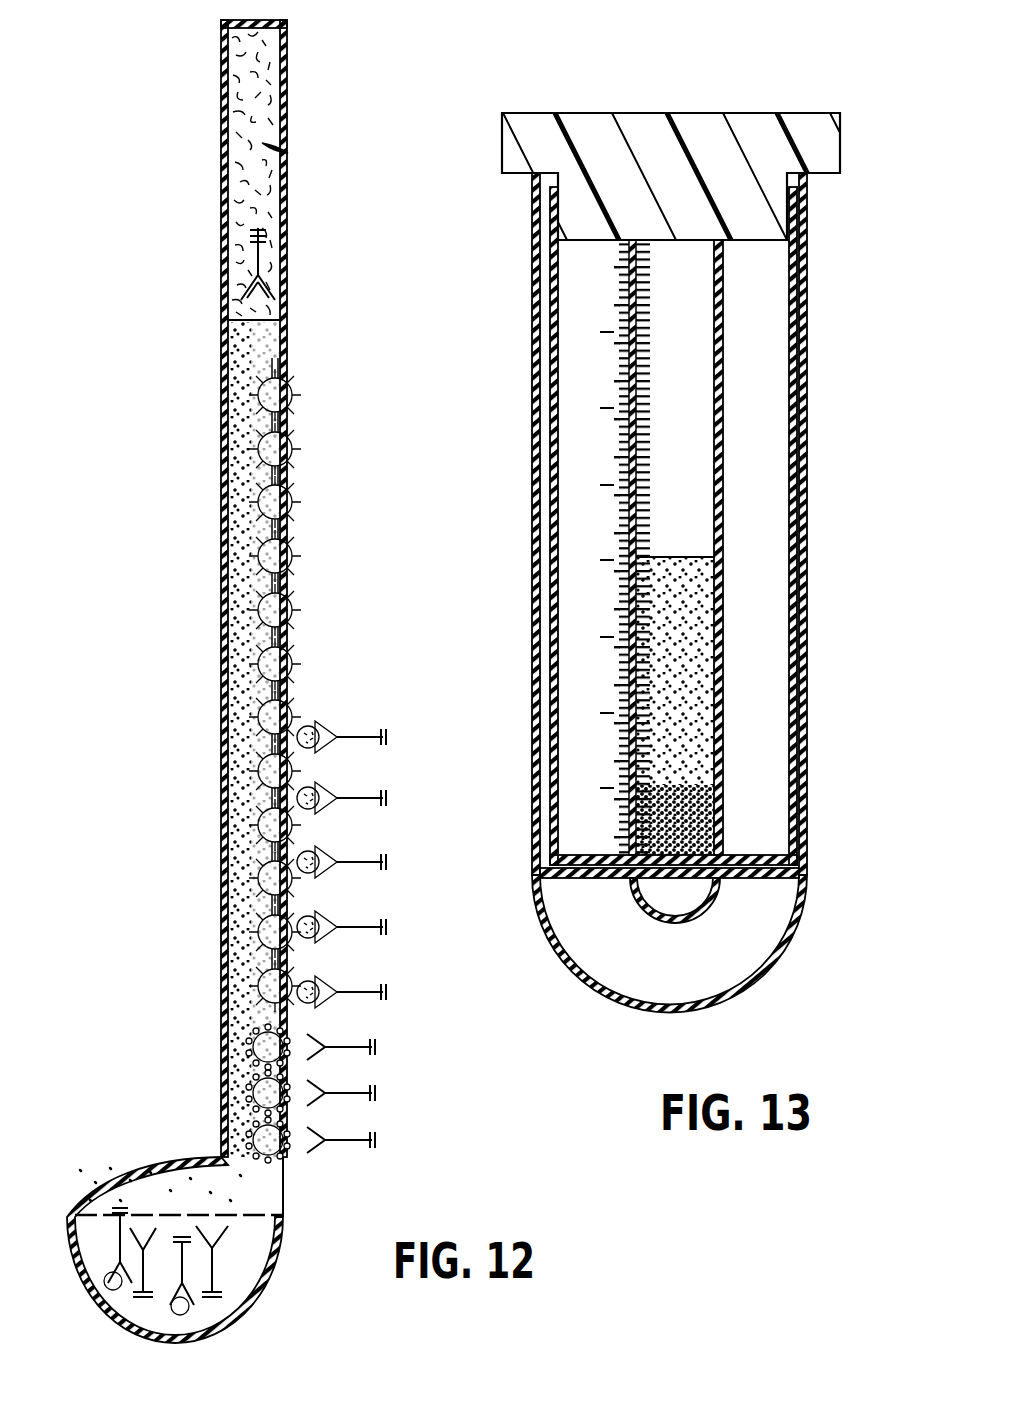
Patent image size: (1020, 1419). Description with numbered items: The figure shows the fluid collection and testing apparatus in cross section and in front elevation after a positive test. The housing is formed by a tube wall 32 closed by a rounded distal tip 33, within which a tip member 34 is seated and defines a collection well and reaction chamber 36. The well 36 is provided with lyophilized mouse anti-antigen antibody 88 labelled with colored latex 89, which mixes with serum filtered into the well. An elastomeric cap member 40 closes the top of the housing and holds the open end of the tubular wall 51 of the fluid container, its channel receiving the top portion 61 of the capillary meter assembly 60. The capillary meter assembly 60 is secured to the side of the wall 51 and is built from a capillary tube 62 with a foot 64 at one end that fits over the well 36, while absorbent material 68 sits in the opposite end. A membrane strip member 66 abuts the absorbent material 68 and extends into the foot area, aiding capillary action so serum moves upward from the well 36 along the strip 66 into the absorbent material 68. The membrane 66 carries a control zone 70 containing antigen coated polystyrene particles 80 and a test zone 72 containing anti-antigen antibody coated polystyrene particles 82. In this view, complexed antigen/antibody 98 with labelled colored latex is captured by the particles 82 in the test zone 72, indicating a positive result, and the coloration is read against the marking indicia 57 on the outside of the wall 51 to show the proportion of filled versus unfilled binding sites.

In FIG. 12, the capillary meter assembly 60 is at (118, 504).
In FIG. 12, the top portion of the capillary meter assembly 61 is at (221, 98).
In FIG. 12, the capillary tube 62 is at (221, 578).
In FIG. 12, the foot 64 is at (188, 1183).
In FIG. 12, the membrane strip member 66 is at (221, 752).
In FIG. 12, the absorbent material 68 is at (288, 153).
In FIG. 12, the antigen coated polystyrene particles 80 is at (248, 1040).
In FIG. 12, the anti-antigen antibody coated polystyrene particles 82 is at (258, 893).
In FIG. 12, the mouse anti-antigen antibody 88 is at (212, 1265).
In FIG. 12, the colored latex 89 is at (212, 1297).
In FIG. 12, the complexed antigen/antibody 98 is at (374, 737).
In FIG. 13, the elastomeric cap member 40 is at (745, 113).
In FIG. 13, the tubular wall 51 is at (548, 803).
In FIG. 13, the marking indicia 57 is at (572, 603).
In FIG. 13, the test zone 72 is at (715, 640).
In FIG. 13, the control zone 70 is at (705, 822).
In FIG. 13, the tube wall 32 is at (533, 843).
In FIG. 13, the collection well and reaction chamber 36 is at (647, 915).
In FIG. 13, the rounded distal tip 33 is at (590, 990).
In FIG. 13, the tip member 34 is at (738, 958).